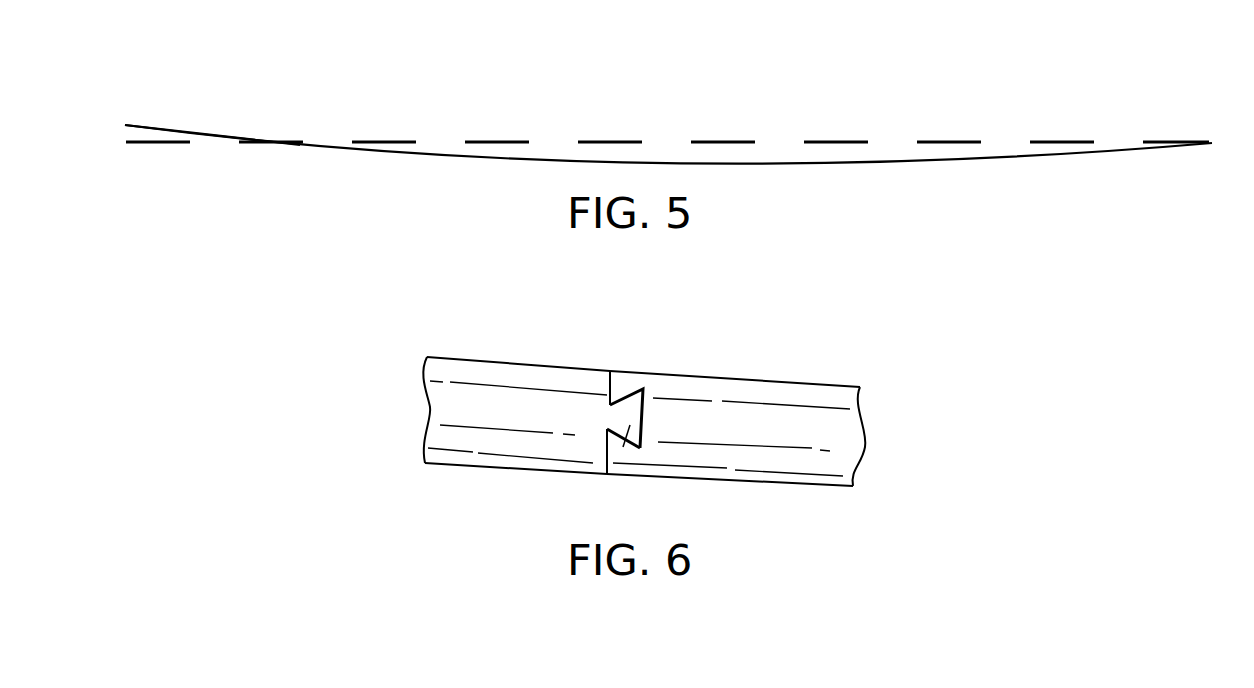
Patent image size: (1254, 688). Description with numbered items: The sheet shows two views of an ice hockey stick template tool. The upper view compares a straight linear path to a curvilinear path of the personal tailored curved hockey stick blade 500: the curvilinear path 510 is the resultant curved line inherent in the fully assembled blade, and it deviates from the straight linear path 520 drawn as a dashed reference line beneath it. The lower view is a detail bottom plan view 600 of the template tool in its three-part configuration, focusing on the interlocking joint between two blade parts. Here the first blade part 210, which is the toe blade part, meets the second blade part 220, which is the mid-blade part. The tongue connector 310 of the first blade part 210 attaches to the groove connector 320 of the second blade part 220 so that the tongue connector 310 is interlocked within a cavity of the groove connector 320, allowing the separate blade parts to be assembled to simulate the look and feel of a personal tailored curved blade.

In FIG. 5, the personal tailored curved hockey stick blade 500 is at (1068, 88).
In FIG. 5, the curvilinear path 510 is at (165, 131).
In FIG. 5, the straight linear path 520 is at (590, 140).
In FIG. 6, the detail bottom plan view 600 is at (937, 392).
In FIG. 6, the first blade part 210 is at (478, 462).
In FIG. 6, the second blade part 220 is at (725, 388).
In FIG. 6, the tongue connector 310 is at (628, 425).
In FIG. 6, the groove connector 320 is at (637, 393).